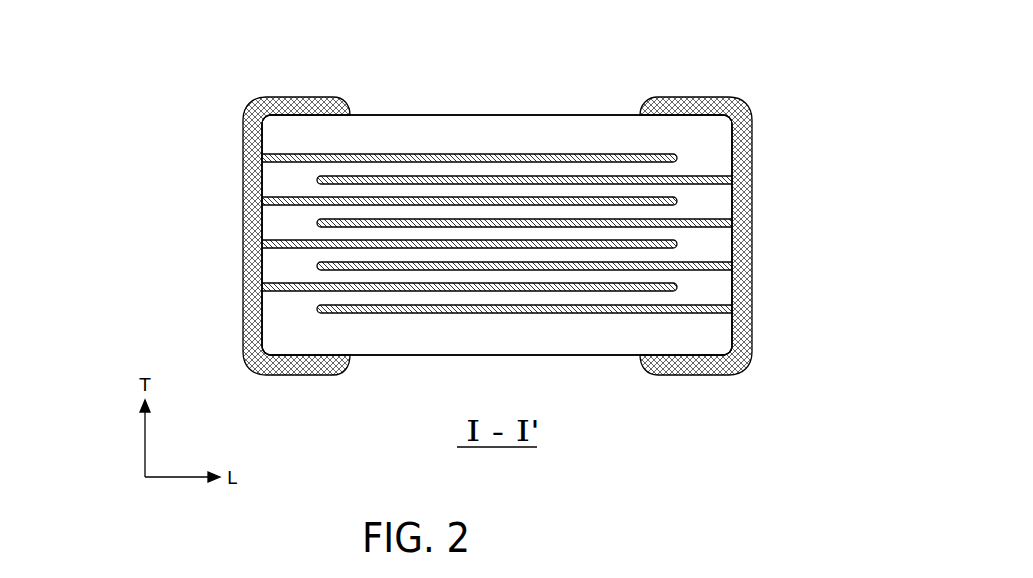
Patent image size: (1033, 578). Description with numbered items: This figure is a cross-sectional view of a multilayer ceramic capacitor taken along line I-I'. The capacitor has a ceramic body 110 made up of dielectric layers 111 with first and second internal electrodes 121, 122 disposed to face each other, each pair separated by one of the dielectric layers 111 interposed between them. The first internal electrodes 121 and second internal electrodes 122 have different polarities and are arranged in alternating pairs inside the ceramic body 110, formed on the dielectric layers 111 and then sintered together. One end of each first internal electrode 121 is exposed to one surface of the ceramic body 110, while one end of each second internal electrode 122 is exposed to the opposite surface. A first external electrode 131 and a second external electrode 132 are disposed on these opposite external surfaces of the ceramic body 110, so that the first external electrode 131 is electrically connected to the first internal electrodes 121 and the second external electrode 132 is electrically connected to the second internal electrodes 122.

The ceramic body 110 is at (498, 114).
The dielectric layer 111 is at (266, 169).
The first internal electrode 121 is at (298, 154).
The second internal electrode 122 is at (320, 179).
The first external electrode 131 is at (299, 97).
The second external electrode 132 is at (696, 97).